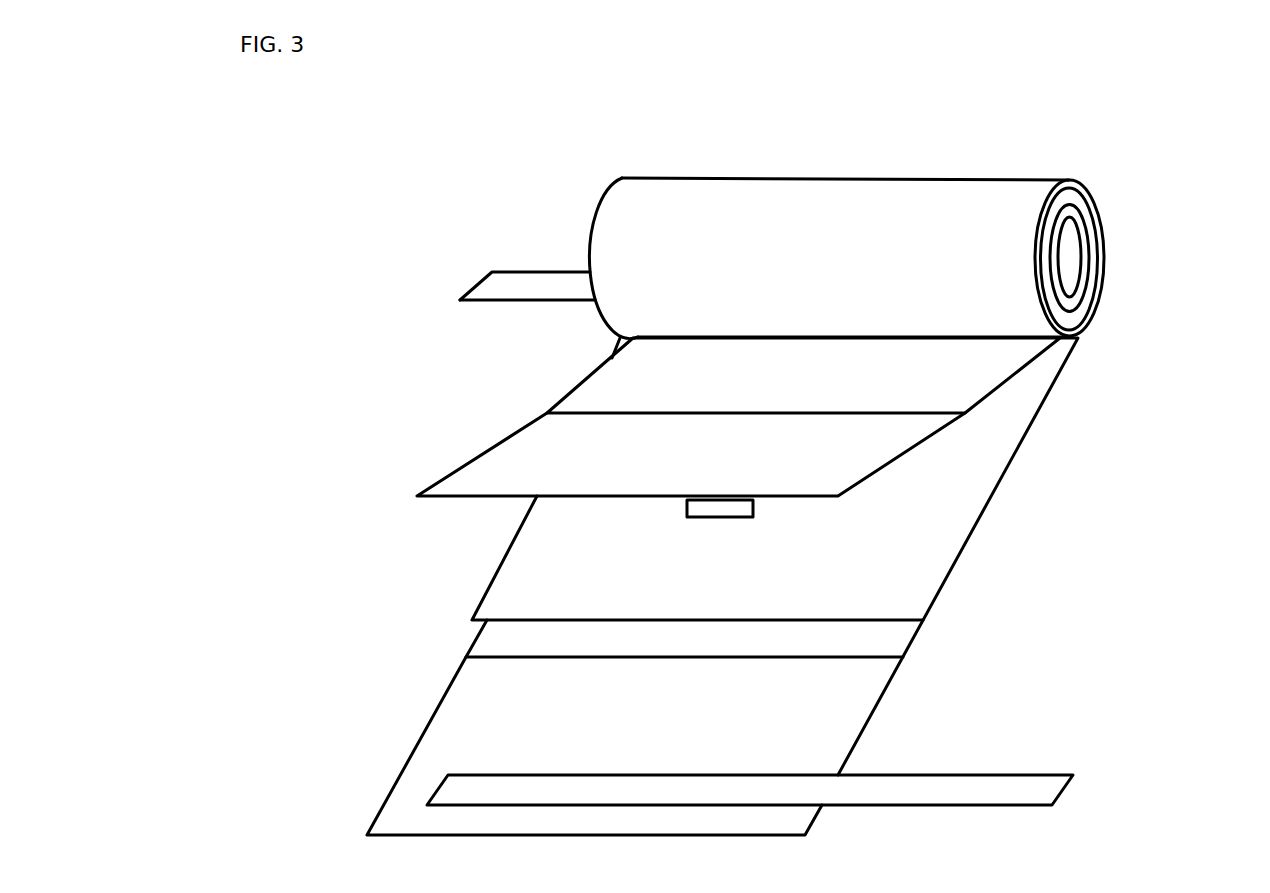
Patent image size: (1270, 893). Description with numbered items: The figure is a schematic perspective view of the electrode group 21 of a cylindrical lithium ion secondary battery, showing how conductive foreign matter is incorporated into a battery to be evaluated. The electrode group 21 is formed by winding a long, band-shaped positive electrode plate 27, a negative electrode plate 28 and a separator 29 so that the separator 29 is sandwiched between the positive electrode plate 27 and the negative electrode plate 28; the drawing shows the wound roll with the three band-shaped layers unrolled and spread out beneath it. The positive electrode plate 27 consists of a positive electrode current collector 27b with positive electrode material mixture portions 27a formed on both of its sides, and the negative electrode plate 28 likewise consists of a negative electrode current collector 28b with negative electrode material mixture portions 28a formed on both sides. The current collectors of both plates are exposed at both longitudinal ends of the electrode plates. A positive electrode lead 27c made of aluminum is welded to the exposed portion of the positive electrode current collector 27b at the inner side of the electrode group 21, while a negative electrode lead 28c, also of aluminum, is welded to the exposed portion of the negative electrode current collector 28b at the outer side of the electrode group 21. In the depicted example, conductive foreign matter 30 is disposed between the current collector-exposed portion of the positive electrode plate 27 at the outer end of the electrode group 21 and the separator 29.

The electrode group 21 is at (1105, 245).
The positive electrode plate 27 is at (809, 369).
The positive electrode material mixture portions 27a is at (973, 375).
The positive electrode current collector 27b is at (872, 450).
The positive electrode lead 27c is at (497, 285).
The negative electrode plate 28 is at (736, 707).
The negative electrode material mixture portions 28a is at (897, 640).
The negative electrode current collector 28b is at (862, 697).
The negative electrode lead 28c is at (750, 760).
The separator 29 is at (970, 512).
The conductive foreign matter 30 is at (693, 508).